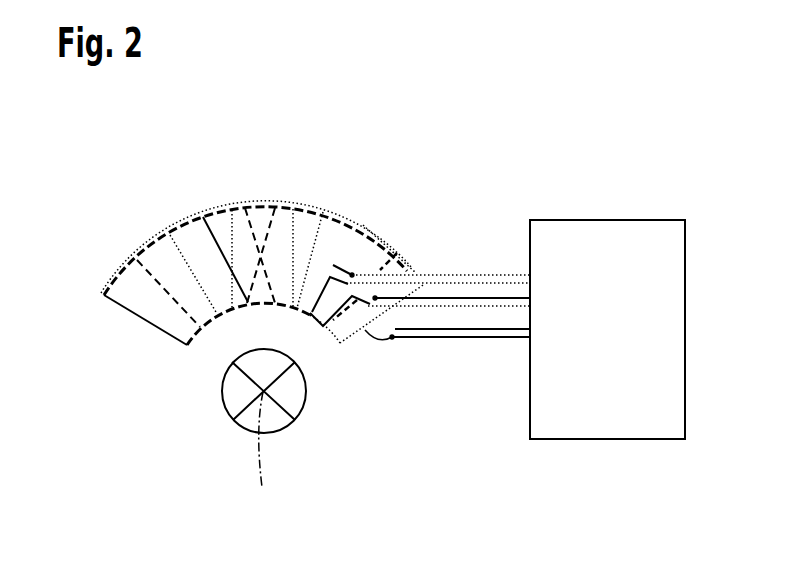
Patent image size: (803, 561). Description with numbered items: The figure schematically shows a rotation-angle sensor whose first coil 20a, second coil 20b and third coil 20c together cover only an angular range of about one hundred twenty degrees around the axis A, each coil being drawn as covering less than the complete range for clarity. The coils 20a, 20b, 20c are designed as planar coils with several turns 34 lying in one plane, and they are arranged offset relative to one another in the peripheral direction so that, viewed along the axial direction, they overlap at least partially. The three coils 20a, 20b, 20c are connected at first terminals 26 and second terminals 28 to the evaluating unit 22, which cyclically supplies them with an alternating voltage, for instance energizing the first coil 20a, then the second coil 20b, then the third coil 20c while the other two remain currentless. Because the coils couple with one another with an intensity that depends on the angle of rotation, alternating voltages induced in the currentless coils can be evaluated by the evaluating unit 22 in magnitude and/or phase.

The evaluating unit 22 is at (598, 430).
The turns 34 is at (152, 314).
The first terminals 26 is at (352, 273).
The second terminals 28 is at (333, 268).
The first coil 20a is at (363, 222).
The second coil 20b is at (402, 243).
The third coil 20c is at (437, 273).
The axis A is at (264, 432).